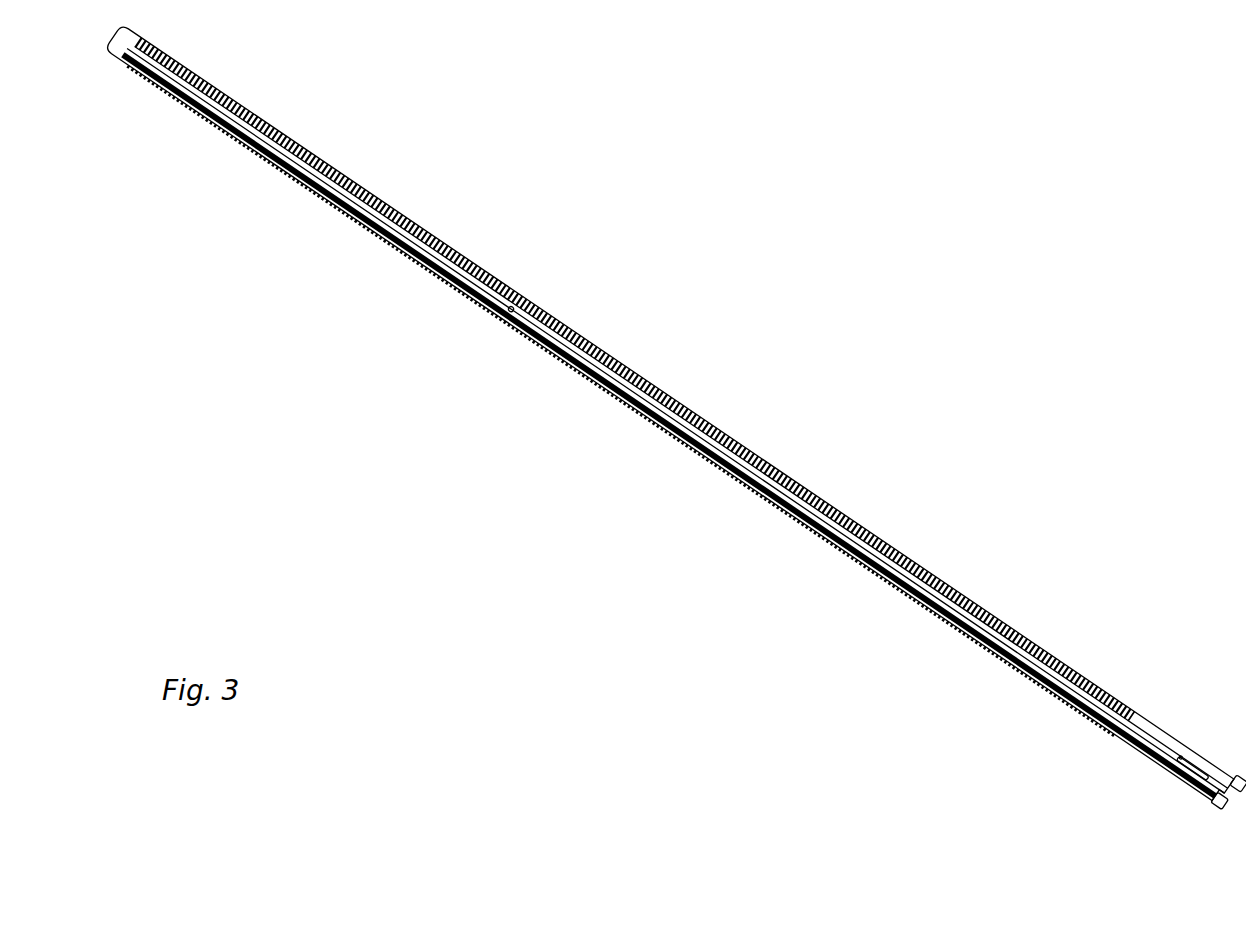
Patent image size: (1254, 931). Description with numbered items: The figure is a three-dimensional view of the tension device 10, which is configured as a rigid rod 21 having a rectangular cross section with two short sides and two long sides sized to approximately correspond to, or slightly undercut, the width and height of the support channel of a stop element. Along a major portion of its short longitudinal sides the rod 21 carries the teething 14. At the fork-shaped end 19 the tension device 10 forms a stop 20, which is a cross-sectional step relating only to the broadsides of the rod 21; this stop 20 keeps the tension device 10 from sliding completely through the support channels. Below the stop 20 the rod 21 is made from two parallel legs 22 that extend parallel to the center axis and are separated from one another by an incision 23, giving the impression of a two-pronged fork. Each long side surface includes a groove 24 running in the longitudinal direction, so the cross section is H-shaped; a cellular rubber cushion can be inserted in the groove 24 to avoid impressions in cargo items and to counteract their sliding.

The tension device 10 is at (836, 459).
The teething 14 is at (876, 533).
The end 19 is at (1157, 690).
The stop 20 is at (1230, 765).
The rod 21 is at (691, 362).
The legs 22 is at (1182, 765).
The incision 23 is at (1200, 792).
The groove 24 is at (496, 304).